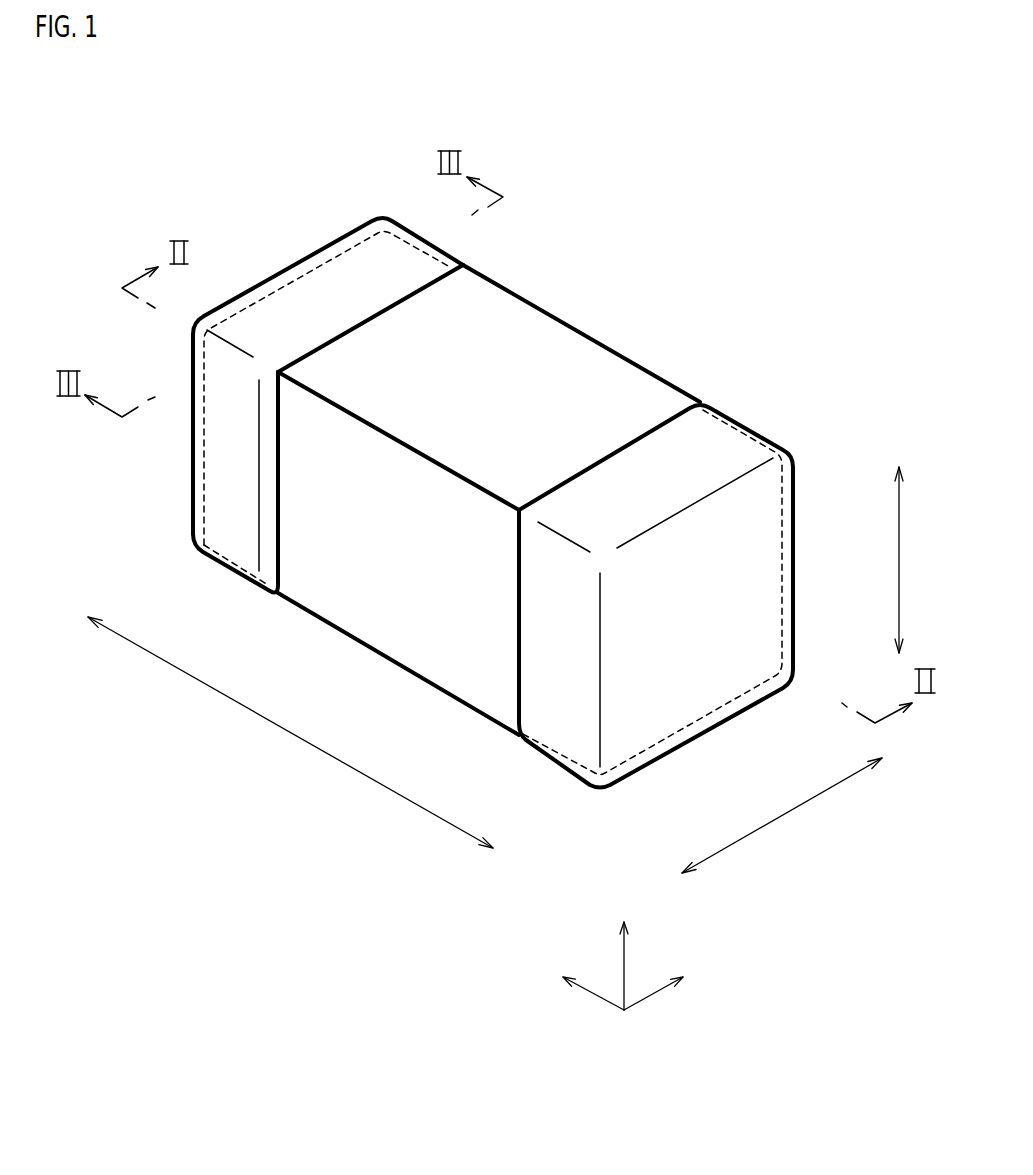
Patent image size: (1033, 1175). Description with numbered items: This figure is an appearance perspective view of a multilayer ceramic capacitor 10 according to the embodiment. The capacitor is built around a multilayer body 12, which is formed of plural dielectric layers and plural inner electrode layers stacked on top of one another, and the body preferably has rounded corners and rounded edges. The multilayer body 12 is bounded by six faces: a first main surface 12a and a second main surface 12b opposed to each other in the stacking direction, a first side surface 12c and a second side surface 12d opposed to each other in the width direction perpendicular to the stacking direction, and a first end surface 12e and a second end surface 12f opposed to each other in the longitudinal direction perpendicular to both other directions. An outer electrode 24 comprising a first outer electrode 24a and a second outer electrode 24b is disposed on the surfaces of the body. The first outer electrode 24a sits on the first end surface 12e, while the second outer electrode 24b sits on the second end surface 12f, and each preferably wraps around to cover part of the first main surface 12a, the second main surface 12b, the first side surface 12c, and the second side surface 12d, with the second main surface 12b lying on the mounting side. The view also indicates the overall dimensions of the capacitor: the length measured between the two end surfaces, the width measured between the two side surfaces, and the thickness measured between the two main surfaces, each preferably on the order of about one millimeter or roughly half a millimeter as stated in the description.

The multilayer ceramic capacitor 10 is at (127, 186).
The multilayer body 12 is at (634, 364).
The first main surface 12a is at (578, 368).
The second main surface 12b is at (364, 624).
The first side surface 12c is at (440, 650).
The second side surface 12d is at (530, 340).
The first end surface 12e is at (304, 287).
The second end surface 12f is at (745, 557).
The outer electrode 24 is at (320, 927).
The first outer electrode 24a is at (404, 216).
The second outer electrode 24b is at (750, 418).